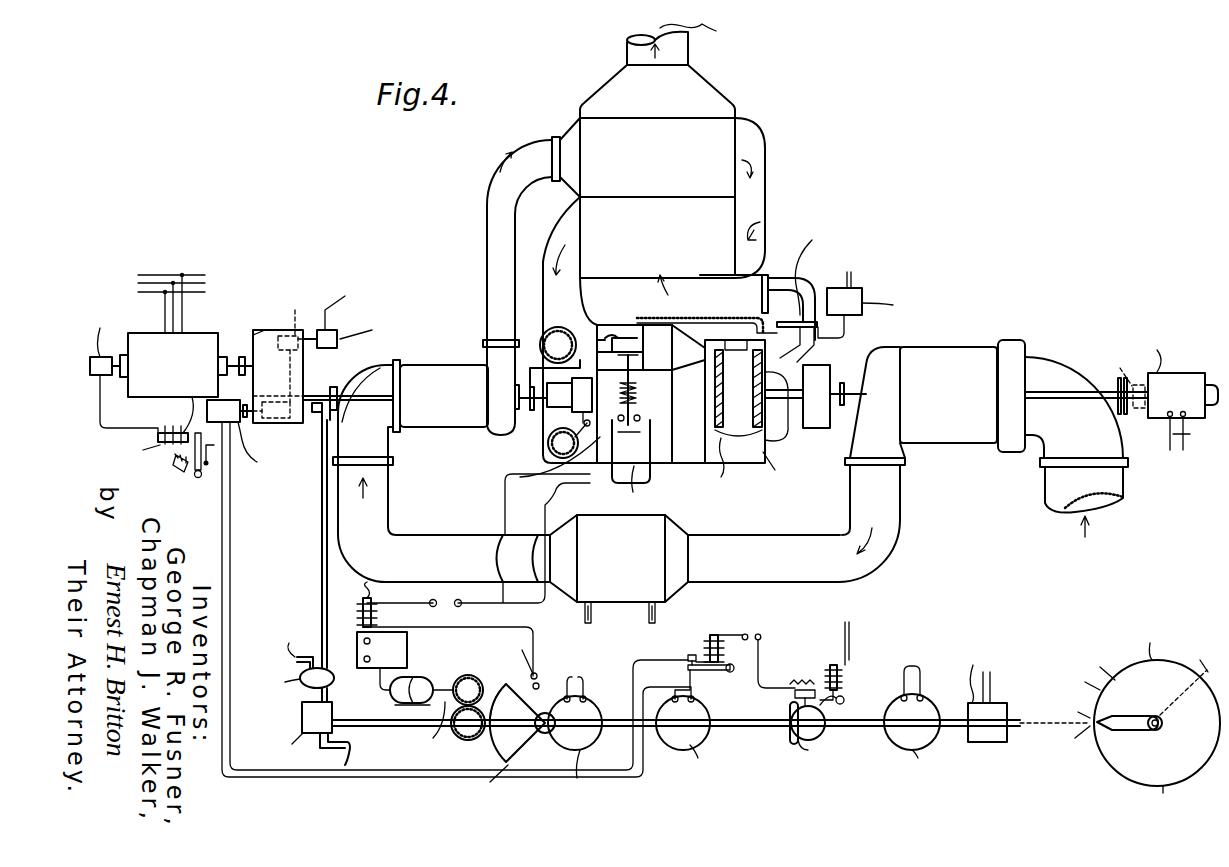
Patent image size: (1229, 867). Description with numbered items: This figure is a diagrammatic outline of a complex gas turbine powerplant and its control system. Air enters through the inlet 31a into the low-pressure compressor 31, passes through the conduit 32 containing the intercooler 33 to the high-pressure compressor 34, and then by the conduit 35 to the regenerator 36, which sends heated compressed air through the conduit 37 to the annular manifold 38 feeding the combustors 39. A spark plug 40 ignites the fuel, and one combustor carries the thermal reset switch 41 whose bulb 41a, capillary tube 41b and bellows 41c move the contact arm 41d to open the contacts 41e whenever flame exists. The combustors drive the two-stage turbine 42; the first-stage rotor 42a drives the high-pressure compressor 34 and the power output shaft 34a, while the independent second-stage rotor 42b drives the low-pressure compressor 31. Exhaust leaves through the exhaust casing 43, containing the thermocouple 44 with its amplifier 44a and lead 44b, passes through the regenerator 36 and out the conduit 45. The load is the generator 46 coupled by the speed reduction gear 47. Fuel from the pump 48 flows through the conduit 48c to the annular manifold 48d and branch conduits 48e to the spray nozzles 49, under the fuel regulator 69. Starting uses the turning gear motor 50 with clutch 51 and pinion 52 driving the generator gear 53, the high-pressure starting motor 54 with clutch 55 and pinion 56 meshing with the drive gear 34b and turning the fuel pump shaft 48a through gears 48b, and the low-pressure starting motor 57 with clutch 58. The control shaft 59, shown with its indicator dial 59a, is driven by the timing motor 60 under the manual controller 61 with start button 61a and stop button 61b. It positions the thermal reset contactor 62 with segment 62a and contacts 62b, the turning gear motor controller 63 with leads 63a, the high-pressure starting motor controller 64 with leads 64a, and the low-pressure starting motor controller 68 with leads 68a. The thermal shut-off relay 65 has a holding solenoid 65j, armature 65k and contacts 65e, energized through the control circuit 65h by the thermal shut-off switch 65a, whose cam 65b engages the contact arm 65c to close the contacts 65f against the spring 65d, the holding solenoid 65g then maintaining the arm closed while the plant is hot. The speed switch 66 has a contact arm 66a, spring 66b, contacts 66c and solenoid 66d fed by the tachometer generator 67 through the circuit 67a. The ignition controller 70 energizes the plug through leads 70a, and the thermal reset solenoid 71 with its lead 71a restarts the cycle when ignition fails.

The low-pressure compressor 31 is at (986, 399).
The inlet 31a is at (1112, 482).
The conduit 32 is at (898, 500).
The intercooler 33 is at (669, 577).
The high-pressure compressor 34 is at (447, 365).
The power output shaft 34a is at (352, 400).
The drive gear 34b is at (303, 390).
The conduit 35 is at (495, 240).
The regenerator 36 is at (672, 180).
The conduit 37 is at (548, 250).
The annular manifold 38 is at (548, 443).
The combustors 39 is at (674, 347).
The igniting device 40 is at (628, 318).
The thermal reset switch 41 is at (574, 414).
The fluid-filled bulb 41a is at (638, 357).
The capillary tube 41b is at (640, 385).
The expansible bellows 41c is at (622, 388).
The contact arm 41d is at (628, 436).
The contacts 41e is at (640, 414).
The two-stage turbine 42 is at (759, 434).
The first-stage rotor 42a is at (715, 400).
The second-stage rotor 42b is at (770, 388).
The exhaust casing 43 is at (805, 430).
The thermocouple 44 is at (819, 284).
The amplifier 44a is at (830, 290).
The amplifier lead 44b is at (853, 270).
The conduit 45 is at (626, 48).
The generator 46 is at (186, 335).
The speed reduction gear 47 is at (269, 340).
The pump 48 is at (292, 658).
The fuel pump shaft 48a is at (320, 525).
The gears 48b is at (330, 416).
The conduit 48c is at (518, 400).
The annular manifold 48d is at (590, 420).
The branch conduits 48e is at (600, 352).
The fuel spray nozzles 49 is at (608, 335).
The turning gear motor 50 is at (358, 322).
The clutch 51 is at (292, 316).
The pinion 52 is at (256, 338).
The generator gear 53 is at (305, 368).
The high-pressure starting motor 54 is at (257, 456).
The clutch 55 is at (268, 420).
The pinion 56 is at (268, 406).
The low-pressure starting motor 57 is at (1121, 368).
The clutch 58 is at (1137, 410).
The rotary shaft 59 is at (355, 722).
The indicator dial 59a is at (1128, 722).
The sequence control timing motor 60 is at (433, 690).
The manual controller 61 is at (408, 650).
The start push-button 61a is at (363, 643).
The stop button 61b is at (363, 661).
The thermal reset contactor 62 is at (474, 741).
The contact segment 62a is at (503, 690).
The contacts 62b is at (522, 660).
The turning gear motor controller 63 is at (590, 700).
The electrical leads 63a is at (579, 684).
The high-pressure starting motor controller 64 is at (708, 730).
The electrical leads 64a is at (222, 485).
The thermal shut-off relay 65 is at (708, 641).
The thermal shut-off switch 65a is at (830, 730).
The cam 65b is at (782, 732).
The contact arm 65c is at (846, 702).
The spring 65d is at (782, 697).
The contacts 65e is at (689, 652).
The contacts 65f is at (806, 680).
The holding solenoid 65g is at (838, 678).
The control circuit 65h is at (758, 664).
The holding solenoid 65j is at (720, 650).
The armature 65k is at (713, 675).
The speed switch 66 is at (131, 451).
The contact arm 66a is at (173, 467).
The spring 66b is at (194, 477).
The contacts 66c is at (195, 404).
The solenoid 66d is at (175, 427).
The tachometer generator 67 is at (90, 366).
The circuit 67a is at (97, 400).
The low-pressure starting motor controller 68 is at (930, 738).
The leads 68a is at (915, 668).
The fuel regulator 69 is at (276, 737).
The ignition controller 70 is at (997, 733).
The leads 70a is at (633, 316).
The thermal reset solenoid 71 is at (358, 612).
The fuse lead 71a is at (362, 582).